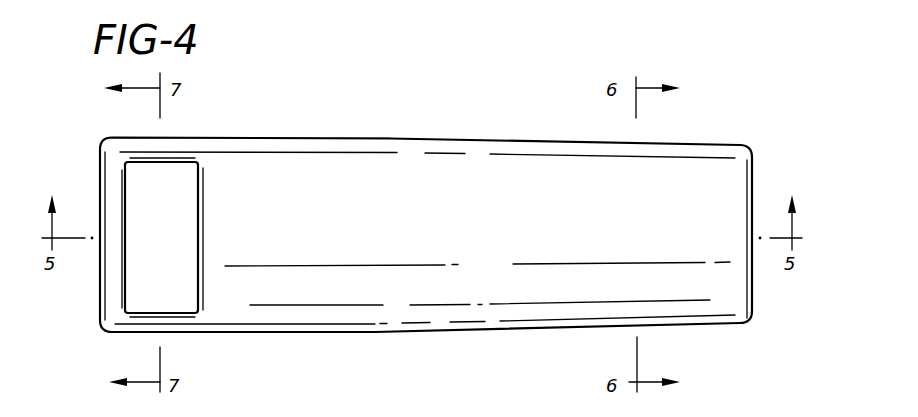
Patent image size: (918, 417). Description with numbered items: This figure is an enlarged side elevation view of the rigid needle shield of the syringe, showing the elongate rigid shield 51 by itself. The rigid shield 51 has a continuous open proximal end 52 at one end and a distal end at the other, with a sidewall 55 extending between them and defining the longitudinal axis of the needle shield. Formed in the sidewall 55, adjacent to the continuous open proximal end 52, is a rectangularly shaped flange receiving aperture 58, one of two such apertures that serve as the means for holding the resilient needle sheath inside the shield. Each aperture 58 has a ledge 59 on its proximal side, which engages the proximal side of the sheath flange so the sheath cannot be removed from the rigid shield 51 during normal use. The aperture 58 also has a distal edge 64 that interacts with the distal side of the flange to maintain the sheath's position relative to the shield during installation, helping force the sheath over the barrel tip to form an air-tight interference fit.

The rigid shield 51 is at (464, 124).
The continuous open proximal end 52 is at (100, 292).
The sidewall 55 is at (383, 163).
The flange receiving aperture 58 is at (178, 258).
The ledge 59 is at (125, 231).
The distal edge 64 is at (198, 213).